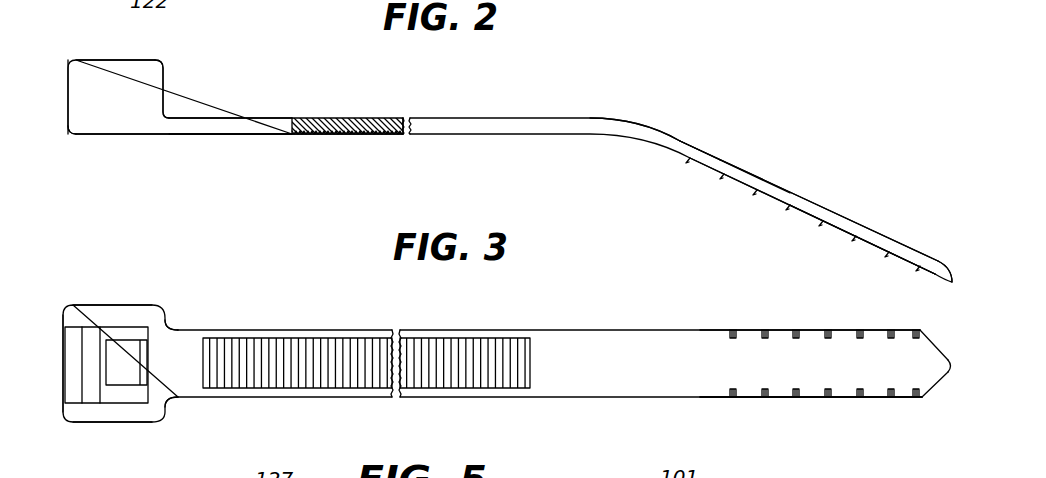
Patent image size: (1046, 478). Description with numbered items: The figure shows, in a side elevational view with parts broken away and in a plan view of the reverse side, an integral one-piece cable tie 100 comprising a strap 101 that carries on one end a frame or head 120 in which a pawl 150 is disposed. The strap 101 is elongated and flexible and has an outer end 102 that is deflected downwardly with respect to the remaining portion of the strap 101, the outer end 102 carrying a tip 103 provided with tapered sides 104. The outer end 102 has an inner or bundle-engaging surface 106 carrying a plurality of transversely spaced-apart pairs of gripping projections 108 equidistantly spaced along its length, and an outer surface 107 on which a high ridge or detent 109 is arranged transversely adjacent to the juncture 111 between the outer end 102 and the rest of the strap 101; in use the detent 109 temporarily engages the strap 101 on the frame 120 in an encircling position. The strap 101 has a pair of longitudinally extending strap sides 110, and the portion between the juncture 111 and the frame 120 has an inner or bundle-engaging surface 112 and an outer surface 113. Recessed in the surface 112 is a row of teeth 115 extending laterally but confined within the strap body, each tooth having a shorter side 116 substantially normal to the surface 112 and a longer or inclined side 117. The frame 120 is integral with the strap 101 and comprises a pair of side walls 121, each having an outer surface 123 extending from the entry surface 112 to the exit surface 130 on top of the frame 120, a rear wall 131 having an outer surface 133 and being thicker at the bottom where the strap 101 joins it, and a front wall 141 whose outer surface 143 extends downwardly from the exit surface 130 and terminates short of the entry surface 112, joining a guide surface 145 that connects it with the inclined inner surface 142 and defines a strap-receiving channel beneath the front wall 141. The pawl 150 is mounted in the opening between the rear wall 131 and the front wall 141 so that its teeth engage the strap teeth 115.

In FIG. 2, the cable tie 100 is at (580, 43).
In FIG. 3, the cable tie 100 is at (562, 282).
In FIG. 2, the strap 101 is at (264, 116).
In FIG. 3, the strap 101 is at (461, 396).
In FIG. 2, the outer end 102 is at (836, 210).
In FIG. 3, the outer end 102 is at (845, 328).
In FIG. 2, the tip 103 is at (943, 265).
In FIG. 3, the tip 103 is at (941, 369).
In FIG. 3, the tapered sides 104 is at (935, 341).
In FIG. 2, the inner or bundle-engaging surface 106 is at (744, 193).
In FIG. 3, the inner or bundle-engaging surface 106 is at (813, 375).
In FIG. 2, the outer surface 107 is at (753, 178).
In FIG. 2, the gripping projections 108 is at (725, 189).
In FIG. 3, the gripping projections 108 is at (730, 389).
In FIG. 2, the ridge or detent 109 is at (686, 148).
In FIG. 2, the strap sides 110 is at (530, 127).
In FIG. 3, the strap sides 110 is at (442, 330).
In FIG. 2, the juncture 111 is at (624, 122).
In FIG. 2, the inner or bundle-engaging surface 112 is at (138, 135).
In FIG. 3, the inner or bundle-engaging surface 112 is at (171, 353).
In FIG. 2, the outer surface 113 is at (445, 117).
In FIG. 2, the teeth 115 is at (323, 134).
In FIG. 3, the teeth 115 is at (287, 353).
In FIG. 2, the shorter side 116 is at (363, 134).
In FIG. 2, the longer or inclined side 117 is at (387, 134).
In FIG. 3, the frame or head 120 is at (100, 428).
In FIG. 3, the side walls 121 is at (109, 319).
In FIG. 2, the outer surface 123 is at (118, 102).
In FIG. 2, the exit surface 130 is at (92, 60).
In FIG. 3, the rear wall or end wall 131 is at (156, 400).
In FIG. 2, the outer surface 133 is at (166, 84).
In FIG. 3, the front wall or abutment wall 141 is at (77, 373).
In FIG. 3, the inner surface 142 is at (90, 340).
In FIG. 2, the outer surface 143 is at (68, 118).
In FIG. 3, the guide surface 145 is at (68, 352).
In FIG. 3, the pawl 150 is at (124, 352).